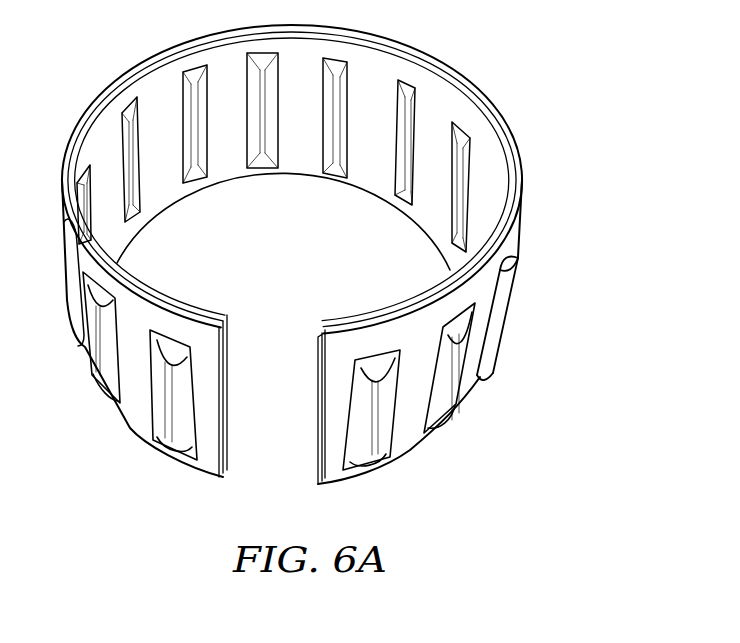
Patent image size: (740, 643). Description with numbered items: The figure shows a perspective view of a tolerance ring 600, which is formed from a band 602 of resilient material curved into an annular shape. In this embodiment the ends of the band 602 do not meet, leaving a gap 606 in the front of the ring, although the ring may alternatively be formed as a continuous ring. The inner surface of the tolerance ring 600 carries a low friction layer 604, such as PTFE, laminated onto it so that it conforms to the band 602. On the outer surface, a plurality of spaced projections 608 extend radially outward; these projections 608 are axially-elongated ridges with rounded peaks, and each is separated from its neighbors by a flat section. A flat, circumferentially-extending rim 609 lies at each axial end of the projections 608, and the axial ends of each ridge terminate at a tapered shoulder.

The tolerance ring 600 is at (342, 267).
The band 602 is at (417, 452).
The low friction layer 604 is at (368, 318).
The gap 606 is at (270, 450).
The projections 608 is at (495, 365).
The rim 609 is at (368, 452).